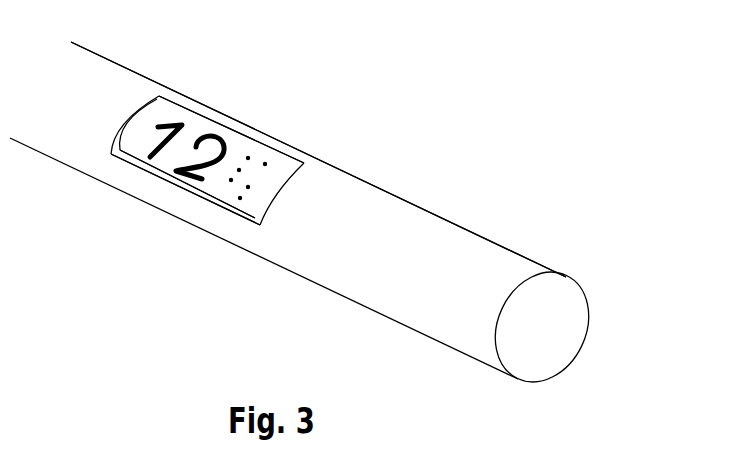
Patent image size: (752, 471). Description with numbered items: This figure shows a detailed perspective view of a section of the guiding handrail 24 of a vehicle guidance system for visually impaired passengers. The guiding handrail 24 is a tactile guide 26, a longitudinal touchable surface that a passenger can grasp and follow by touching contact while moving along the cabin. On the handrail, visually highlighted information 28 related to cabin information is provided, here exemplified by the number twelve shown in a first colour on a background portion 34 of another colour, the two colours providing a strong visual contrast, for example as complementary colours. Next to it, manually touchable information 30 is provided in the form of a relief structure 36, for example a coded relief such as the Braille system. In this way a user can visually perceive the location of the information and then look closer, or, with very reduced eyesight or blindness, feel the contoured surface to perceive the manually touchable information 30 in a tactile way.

The guiding handrail 24 is at (422, 140).
The tactile guide 26 is at (513, 226).
The visually highlighted information 28 is at (231, 120).
The manually touchable information 30 is at (242, 222).
The background portion 34 is at (271, 149).
The relief structure 36 is at (227, 190).